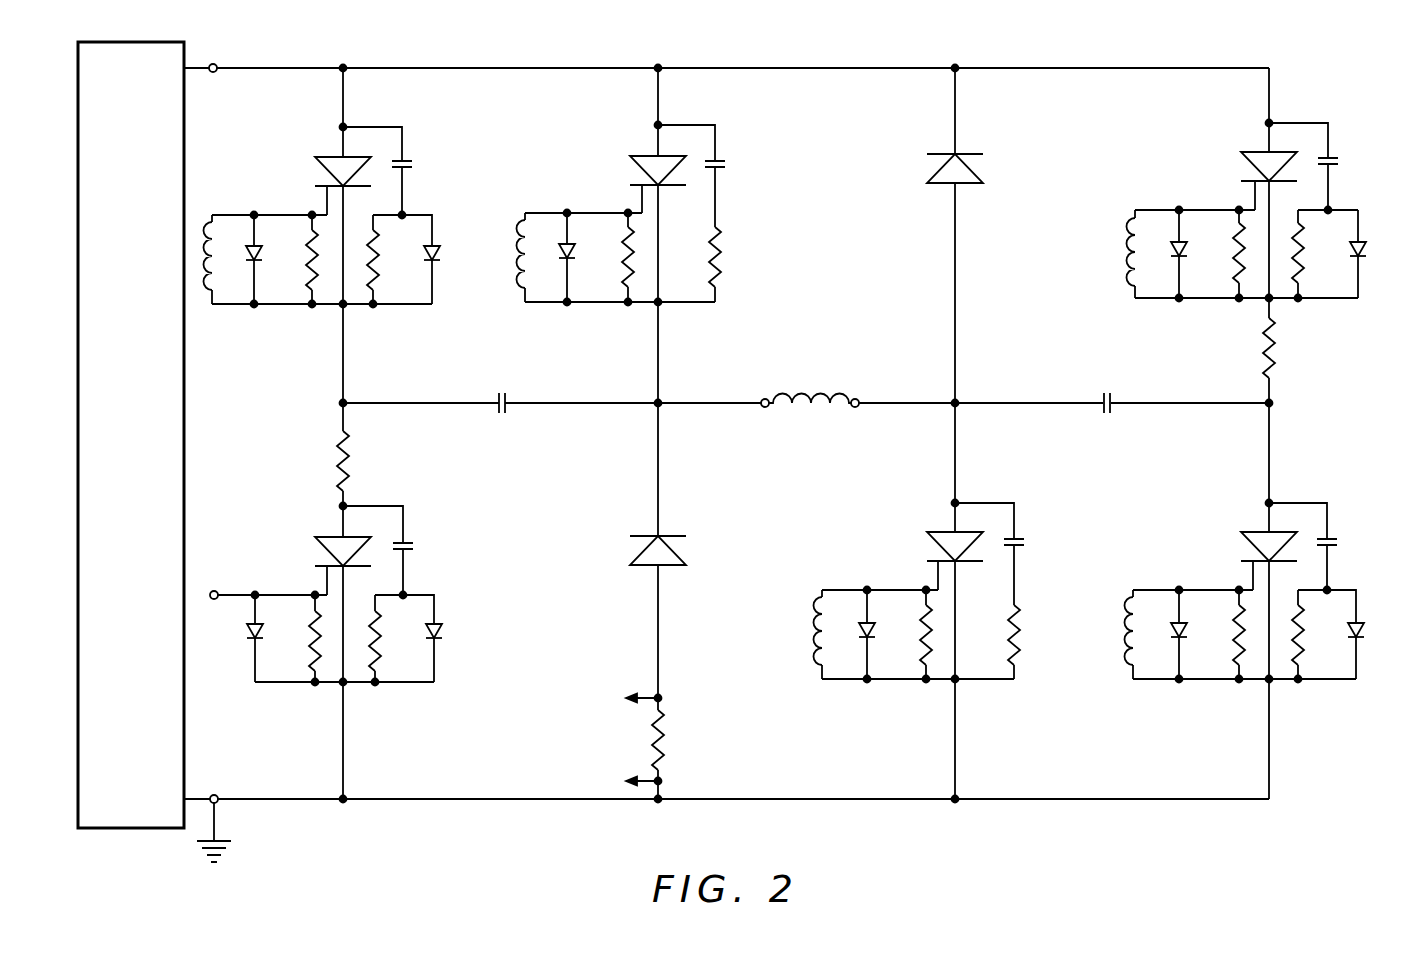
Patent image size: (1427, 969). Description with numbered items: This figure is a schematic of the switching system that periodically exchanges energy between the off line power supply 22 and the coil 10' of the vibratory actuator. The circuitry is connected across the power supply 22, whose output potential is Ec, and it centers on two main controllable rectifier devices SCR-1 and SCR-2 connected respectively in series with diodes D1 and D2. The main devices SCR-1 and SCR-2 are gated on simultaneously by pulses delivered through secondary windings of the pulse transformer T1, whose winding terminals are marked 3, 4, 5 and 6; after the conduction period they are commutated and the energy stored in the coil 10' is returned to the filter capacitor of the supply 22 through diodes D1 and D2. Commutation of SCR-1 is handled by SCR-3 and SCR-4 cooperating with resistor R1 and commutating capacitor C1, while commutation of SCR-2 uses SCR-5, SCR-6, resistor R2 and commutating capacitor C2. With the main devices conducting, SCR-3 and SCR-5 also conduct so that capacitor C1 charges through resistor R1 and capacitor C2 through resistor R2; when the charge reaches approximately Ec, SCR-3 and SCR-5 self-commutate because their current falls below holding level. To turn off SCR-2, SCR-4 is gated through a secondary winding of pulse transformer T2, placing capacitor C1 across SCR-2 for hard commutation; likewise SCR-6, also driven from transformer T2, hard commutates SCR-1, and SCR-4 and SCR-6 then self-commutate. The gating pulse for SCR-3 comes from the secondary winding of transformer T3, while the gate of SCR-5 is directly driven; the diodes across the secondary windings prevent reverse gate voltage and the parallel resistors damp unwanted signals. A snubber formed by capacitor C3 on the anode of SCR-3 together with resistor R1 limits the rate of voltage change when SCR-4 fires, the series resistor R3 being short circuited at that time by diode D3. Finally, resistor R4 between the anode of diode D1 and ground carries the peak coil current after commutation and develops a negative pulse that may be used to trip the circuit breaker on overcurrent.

The off line power supply 22 is at (184, 135).
The supply voltage Ec is at (224, 54).
The main controllable rectifier device SCR-1 is at (625, 214).
The main controllable rectifier device SCR-2 is at (923, 591).
The self-commutating SCR SCR-3 is at (1246, 211).
The commutating SCR SCR-4 is at (1248, 591).
The self-commutating SCR SCR-5 is at (326, 594).
The commutating SCR SCR-6 is at (326, 216).
The diode D1 is at (680, 550).
The diode D2 is at (975, 168).
The diode D3 is at (1376, 254).
The commutating capacitor C1 is at (1109, 389).
The commutating capacitor C2 is at (515, 389).
The capacitor C3 is at (1321, 168).
The resistor R1 is at (1291, 348).
The resistor R2 is at (365, 461).
The resistor R3 is at (1325, 254).
The resistor R4 is at (667, 740).
The pulse transformer T1 is at (656, 440).
The pulse transformer T2 is at (662, 437).
The transformer T3 is at (1111, 248).
The coil 10' is at (810, 386).
The winding terminal 3 is at (841, 463).
The winding terminal 4 is at (841, 417).
The winding terminal 5 is at (528, 464).
The winding terminal 6 is at (528, 419).